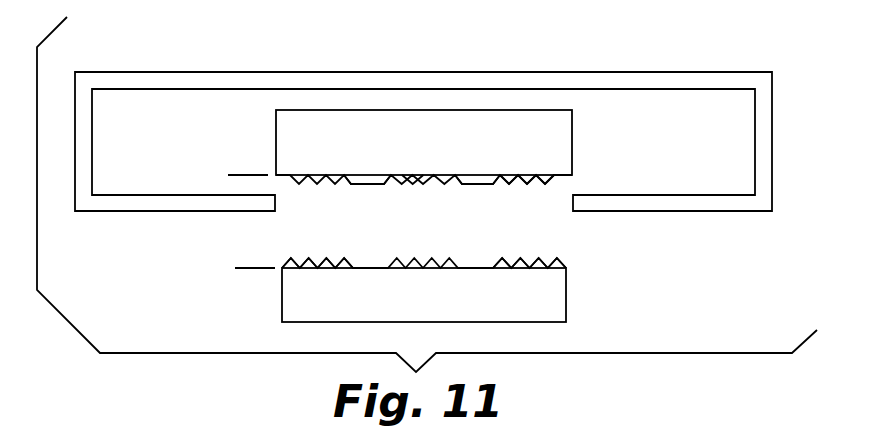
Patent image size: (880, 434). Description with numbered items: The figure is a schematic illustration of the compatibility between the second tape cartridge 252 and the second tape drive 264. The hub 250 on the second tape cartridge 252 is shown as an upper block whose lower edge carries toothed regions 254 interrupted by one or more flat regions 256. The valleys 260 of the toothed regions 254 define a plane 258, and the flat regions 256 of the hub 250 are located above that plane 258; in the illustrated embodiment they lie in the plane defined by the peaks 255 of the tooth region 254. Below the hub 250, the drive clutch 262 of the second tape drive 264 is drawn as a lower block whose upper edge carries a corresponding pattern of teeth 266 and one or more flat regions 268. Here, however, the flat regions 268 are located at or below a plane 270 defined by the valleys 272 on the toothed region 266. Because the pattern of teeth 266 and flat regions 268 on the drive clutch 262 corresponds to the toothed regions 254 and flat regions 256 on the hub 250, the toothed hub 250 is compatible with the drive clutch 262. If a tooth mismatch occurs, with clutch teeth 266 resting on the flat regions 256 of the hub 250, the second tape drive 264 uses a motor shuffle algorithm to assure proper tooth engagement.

The hub 250 is at (563, 121).
The second tape cartridge 252 is at (358, 80).
The toothed regions 254 is at (557, 182).
The peaks 255 is at (419, 186).
The flat regions 256 is at (480, 177).
The plane 258 is at (238, 175).
The valleys 260 is at (308, 173).
The drive clutch 262 is at (288, 306).
The second tape drive 264 is at (622, 32).
The teeth 266 is at (560, 267).
The flat regions 268 is at (363, 267).
The plane 270 is at (255, 268).
The valleys 272 is at (403, 270).